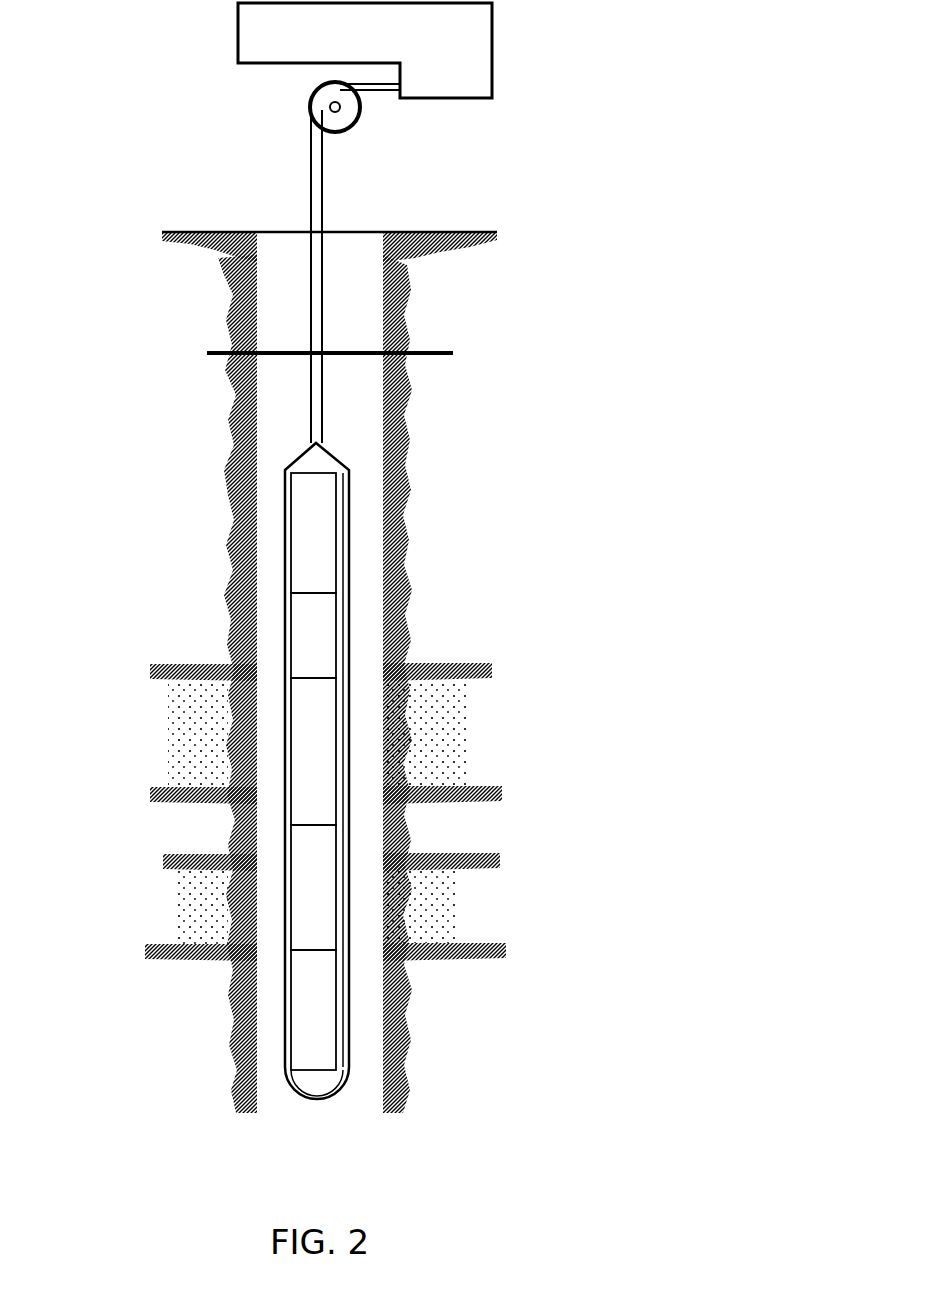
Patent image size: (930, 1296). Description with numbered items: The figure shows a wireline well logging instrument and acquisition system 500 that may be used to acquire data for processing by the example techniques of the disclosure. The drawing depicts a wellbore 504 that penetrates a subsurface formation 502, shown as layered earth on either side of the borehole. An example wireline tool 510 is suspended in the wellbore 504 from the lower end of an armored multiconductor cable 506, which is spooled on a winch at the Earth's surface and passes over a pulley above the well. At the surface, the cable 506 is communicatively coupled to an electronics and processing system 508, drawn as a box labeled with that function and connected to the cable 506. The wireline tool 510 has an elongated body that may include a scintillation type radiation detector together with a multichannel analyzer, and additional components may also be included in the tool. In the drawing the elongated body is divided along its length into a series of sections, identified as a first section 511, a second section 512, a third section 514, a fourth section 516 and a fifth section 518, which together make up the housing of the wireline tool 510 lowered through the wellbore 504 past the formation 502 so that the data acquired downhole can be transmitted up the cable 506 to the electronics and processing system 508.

The downhole logging system 500 is at (126, 110).
The formation 502 is at (432, 758).
The wellbore 504 is at (348, 407).
The armored multiconductor cable 506 is at (322, 290).
The electronics and processing system 508 is at (458, 52).
The wireline tool 510 is at (349, 570).
The tool section 511 is at (322, 527).
The tool section 512 is at (322, 625).
The tool section 514 is at (322, 753).
The tool section 516 is at (322, 888).
The tool section 518 is at (322, 1010).